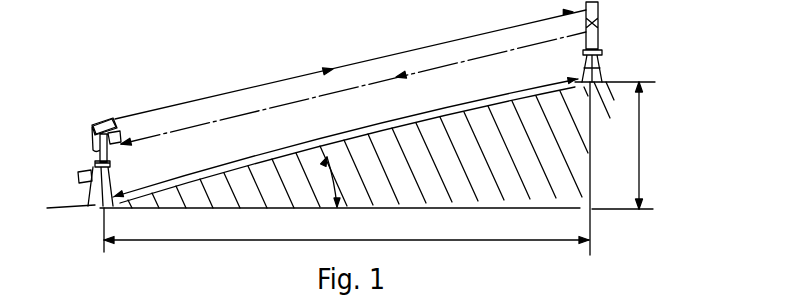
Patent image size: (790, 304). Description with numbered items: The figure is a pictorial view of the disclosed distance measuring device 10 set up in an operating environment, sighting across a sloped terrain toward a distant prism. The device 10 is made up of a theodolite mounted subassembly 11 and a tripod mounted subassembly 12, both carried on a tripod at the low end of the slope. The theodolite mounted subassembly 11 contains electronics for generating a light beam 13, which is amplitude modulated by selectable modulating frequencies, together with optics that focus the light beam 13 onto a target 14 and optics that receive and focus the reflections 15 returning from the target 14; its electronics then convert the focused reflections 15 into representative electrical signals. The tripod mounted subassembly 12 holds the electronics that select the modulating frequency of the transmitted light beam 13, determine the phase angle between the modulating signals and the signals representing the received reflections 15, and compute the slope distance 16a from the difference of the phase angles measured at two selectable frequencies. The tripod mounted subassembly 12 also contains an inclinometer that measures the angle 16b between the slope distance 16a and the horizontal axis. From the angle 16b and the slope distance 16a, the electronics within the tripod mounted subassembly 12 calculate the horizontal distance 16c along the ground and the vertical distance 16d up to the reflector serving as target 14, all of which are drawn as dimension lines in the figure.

The distance measuring device 10 is at (83, 128).
The theodolite mounted subassembly 11 is at (97, 121).
The tripod mounted subassembly 12 is at (83, 177).
The light beam 13 is at (302, 76).
The target 14 is at (602, 41).
The reflections 15 is at (248, 113).
The slope distance 16a is at (345, 140).
The angle 16b is at (356, 182).
The horizontal distance 16c is at (346, 230).
The vertical distance 16d is at (652, 145).